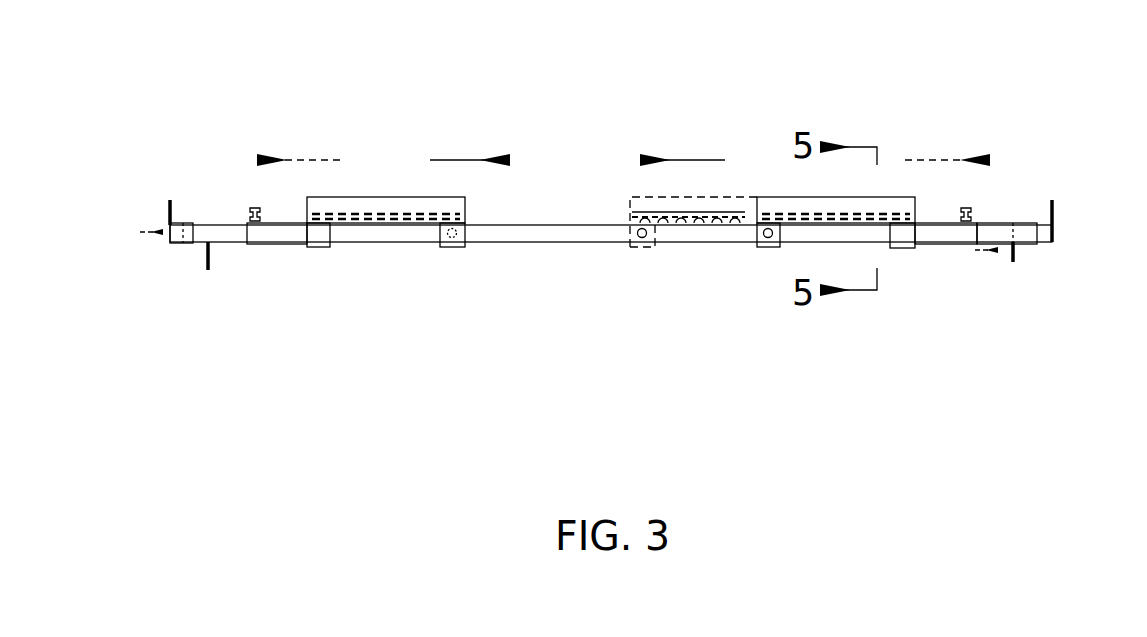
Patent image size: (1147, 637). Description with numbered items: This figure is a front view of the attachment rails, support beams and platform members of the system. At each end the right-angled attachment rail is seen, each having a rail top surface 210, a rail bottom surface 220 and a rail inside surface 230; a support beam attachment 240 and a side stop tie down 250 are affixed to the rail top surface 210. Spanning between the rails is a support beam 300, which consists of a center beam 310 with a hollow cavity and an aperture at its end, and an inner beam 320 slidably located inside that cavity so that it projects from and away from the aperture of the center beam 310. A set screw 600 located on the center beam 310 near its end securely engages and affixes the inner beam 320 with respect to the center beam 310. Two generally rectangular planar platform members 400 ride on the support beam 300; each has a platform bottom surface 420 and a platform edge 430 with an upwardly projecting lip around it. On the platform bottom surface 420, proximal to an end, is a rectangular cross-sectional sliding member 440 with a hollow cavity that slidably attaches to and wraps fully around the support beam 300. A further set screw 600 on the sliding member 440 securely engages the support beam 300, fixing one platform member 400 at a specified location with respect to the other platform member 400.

The rail top surface 210 is at (1022, 222).
The rail bottom surface 220 is at (1017, 243).
The rail inside surface 230 is at (207, 260).
The support beam attachment 240 is at (170, 240).
The side stop tie down 250 is at (185, 220).
The support beam 300 is at (545, 255).
The center beam 310 is at (580, 243).
The inner beam 320 is at (233, 243).
The platform member 400 is at (465, 207).
The platform bottom surface 420 is at (388, 212).
The platform edge 430 is at (385, 197).
The sliding member 440 is at (898, 245).
The set screw 600 is at (253, 208).